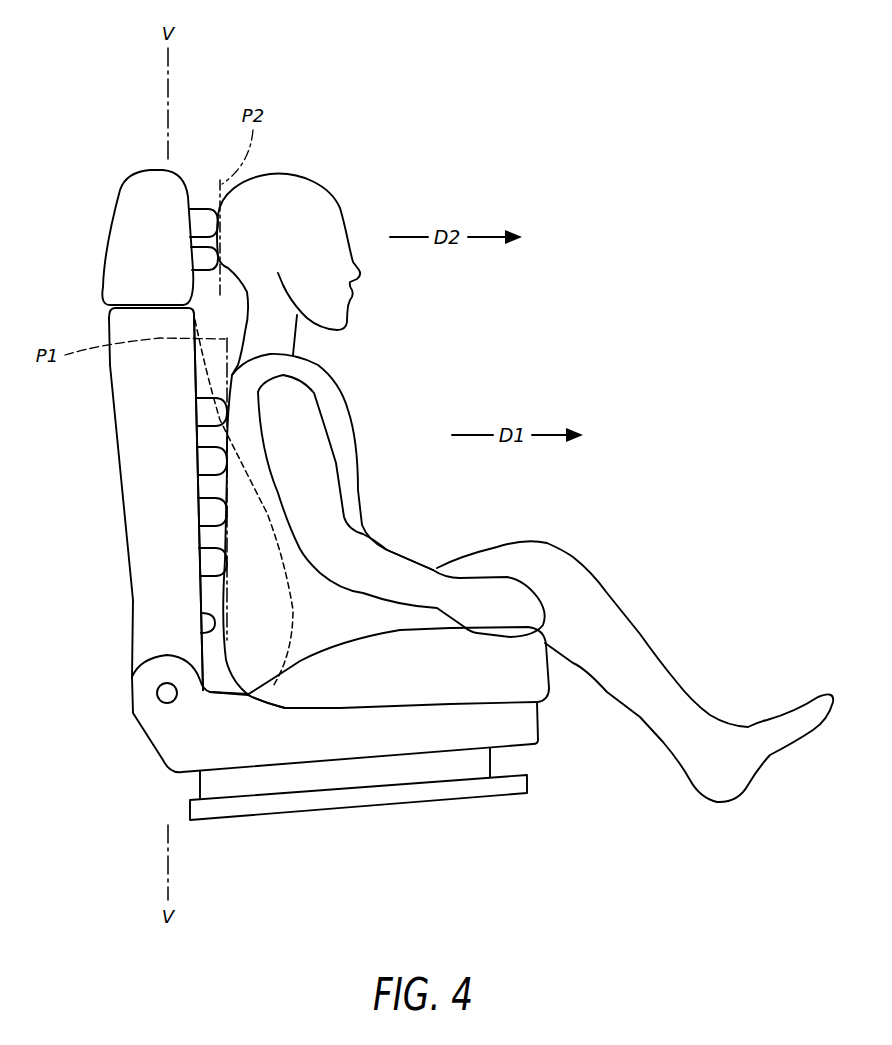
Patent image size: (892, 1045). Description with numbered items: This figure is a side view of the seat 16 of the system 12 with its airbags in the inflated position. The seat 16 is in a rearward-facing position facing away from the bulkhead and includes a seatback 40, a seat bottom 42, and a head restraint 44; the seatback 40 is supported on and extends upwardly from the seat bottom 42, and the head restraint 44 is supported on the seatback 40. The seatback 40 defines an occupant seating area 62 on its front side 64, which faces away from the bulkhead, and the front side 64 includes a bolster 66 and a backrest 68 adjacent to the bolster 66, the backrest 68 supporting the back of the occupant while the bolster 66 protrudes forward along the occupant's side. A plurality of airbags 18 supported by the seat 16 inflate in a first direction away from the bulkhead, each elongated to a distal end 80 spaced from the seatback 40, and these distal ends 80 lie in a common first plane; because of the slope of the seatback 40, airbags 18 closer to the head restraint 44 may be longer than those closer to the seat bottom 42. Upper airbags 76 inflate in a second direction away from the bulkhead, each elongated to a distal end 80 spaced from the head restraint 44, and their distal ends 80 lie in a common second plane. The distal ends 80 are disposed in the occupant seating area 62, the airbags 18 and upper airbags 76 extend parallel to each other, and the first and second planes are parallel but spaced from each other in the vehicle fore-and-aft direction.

The system 12 is at (510, 168).
The seat 16 is at (95, 330).
The airbags 18 is at (200, 427).
The seatback 40 is at (183, 374).
The seat bottom 42 is at (552, 697).
The head restraint 44 is at (118, 203).
The occupant seating area 62 is at (552, 268).
The front side 64 is at (193, 372).
The bolster 66 is at (293, 617).
The backrest 68 is at (215, 627).
The upper airbags 76 is at (193, 277).
The distal end 80 is at (218, 262).